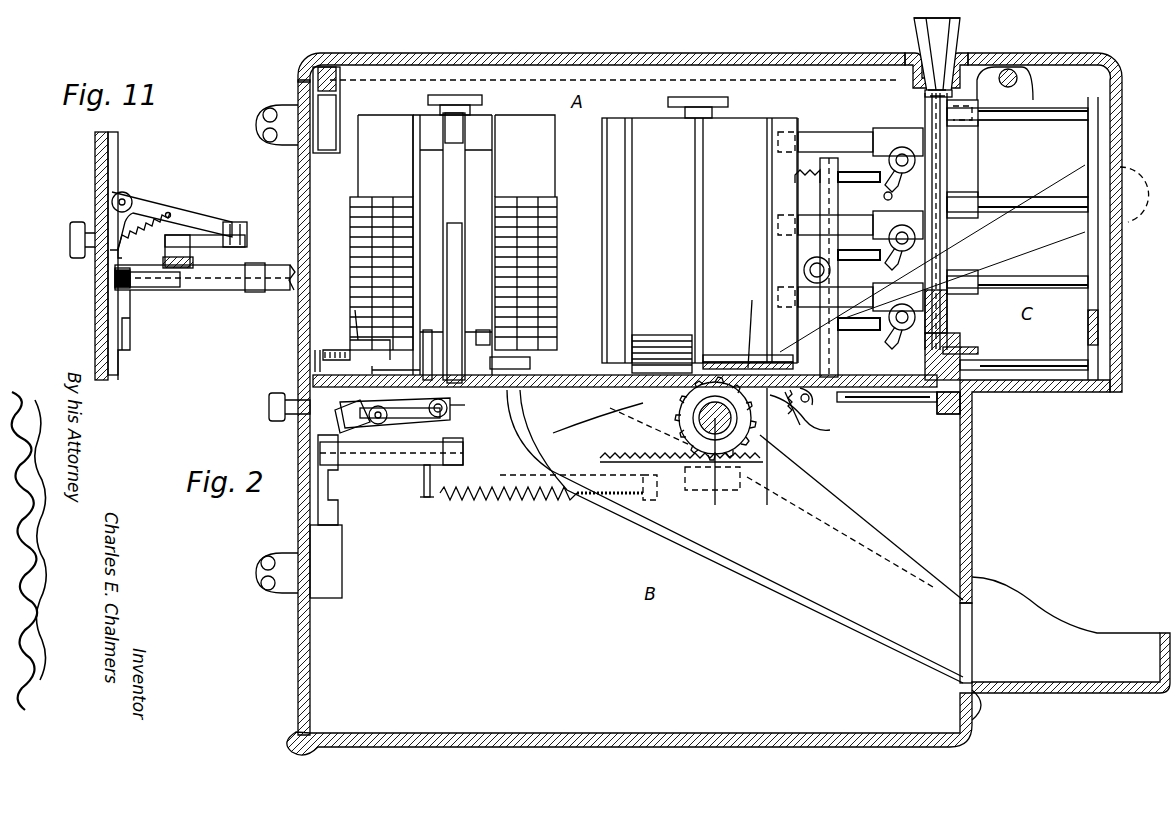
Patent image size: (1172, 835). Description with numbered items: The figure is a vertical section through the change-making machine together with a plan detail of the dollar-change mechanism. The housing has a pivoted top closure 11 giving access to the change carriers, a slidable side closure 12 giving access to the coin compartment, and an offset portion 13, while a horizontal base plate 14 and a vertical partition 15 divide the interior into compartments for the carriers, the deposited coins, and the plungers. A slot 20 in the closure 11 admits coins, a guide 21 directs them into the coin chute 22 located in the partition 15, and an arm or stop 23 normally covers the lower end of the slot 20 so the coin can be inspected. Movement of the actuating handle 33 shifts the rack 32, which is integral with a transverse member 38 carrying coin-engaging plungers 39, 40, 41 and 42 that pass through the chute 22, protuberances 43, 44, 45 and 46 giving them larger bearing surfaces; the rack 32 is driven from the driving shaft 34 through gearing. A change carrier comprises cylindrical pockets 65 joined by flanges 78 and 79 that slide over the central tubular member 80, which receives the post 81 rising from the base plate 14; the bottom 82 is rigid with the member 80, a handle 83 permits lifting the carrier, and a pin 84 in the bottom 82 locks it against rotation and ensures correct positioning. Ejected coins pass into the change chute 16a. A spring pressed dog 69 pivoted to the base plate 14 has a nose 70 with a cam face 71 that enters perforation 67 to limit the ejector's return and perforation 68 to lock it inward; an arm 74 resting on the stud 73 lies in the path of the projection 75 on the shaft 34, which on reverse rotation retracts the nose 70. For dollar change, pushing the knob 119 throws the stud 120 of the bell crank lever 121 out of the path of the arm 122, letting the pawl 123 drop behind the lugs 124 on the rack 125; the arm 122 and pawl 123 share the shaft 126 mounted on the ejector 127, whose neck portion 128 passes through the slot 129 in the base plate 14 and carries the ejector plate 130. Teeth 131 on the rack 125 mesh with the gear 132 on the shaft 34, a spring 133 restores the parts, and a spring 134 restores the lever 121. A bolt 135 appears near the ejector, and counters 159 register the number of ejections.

In FIG. 2, the pivoted closure 11 is at (476, 53).
In FIG. 2, the slidable closure 12 is at (312, 628).
In FIG. 2, the offset portion 13 is at (1122, 92).
In FIG. 2, the base plate 14 is at (832, 402).
In FIG. 2, the vertical partition 15 is at (947, 240).
In FIG. 2, the change chute 16a is at (735, 536).
In FIG. 2, the slot 20 is at (958, 48).
In FIG. 2, the guide 21 is at (917, 26).
In FIG. 2, the coin chute 22 is at (955, 142).
In FIG. 2, the arm or stop 23 is at (930, 94).
In FIG. 2, the rack 32 is at (1068, 160).
In FIG. 2, the actuating handle 33 is at (1126, 222).
In FIG. 2, the driving shaft 34 is at (715, 450).
In FIG. 2, the transverse member 38 is at (1090, 226).
In FIG. 2, the coin-engaging plunger 39 is at (1035, 362).
In FIG. 2, the coin-engaging plunger 40 is at (1048, 284).
In FIG. 2, the coin-engaging plunger 41 is at (1022, 206).
In FIG. 2, the coin-engaging plunger 42 is at (1092, 100).
In FIG. 2, the protuberance 43 is at (968, 350).
In FIG. 2, the protuberance 44 is at (965, 278).
In FIG. 2, the protuberance 45 is at (978, 172).
In FIG. 2, the protuberance 46 is at (1033, 86).
In FIG. 2, the pockets 65 is at (573, 239).
In FIG. 2, the perforation 67 is at (750, 321).
In FIG. 2, the perforation 68 is at (877, 405).
In FIG. 2, the spring pressed dog 69 is at (797, 412).
In FIG. 2, the nose 70 is at (778, 420).
In FIG. 2, the cam face 71 is at (745, 355).
In FIG. 2, the stud 73 is at (820, 410).
In FIG. 2, the arm 74 is at (808, 420).
In FIG. 2, the projection 75 is at (772, 456).
In FIG. 2, the flange 78 is at (488, 145).
In FIG. 2, the flange 79 is at (484, 330).
In FIG. 2, the tubular member 80 is at (466, 186).
In FIG. 2, the post 81 is at (452, 222).
In FIG. 2, the bottom 82 is at (715, 342).
In FIG. 2, the handle 83 is at (428, 100).
In FIG. 2, the pin 84 is at (427, 330).
In FIG. 2, the knob 119 is at (268, 407).
In FIG. 11, the knob 119 is at (70, 238).
In FIG. 11, the stud 120 is at (248, 232).
In FIG. 11, the bell crank lever 121 is at (135, 195).
In FIG. 2, the arm 122 is at (430, 425).
In FIG. 11, the arm 122 is at (215, 240).
In FIG. 2, the pawl 123 is at (362, 425).
In FIG. 11, the pawl 123 is at (152, 287).
In FIG. 2, the lugs 124 is at (330, 445).
In FIG. 11, the lugs 124 is at (112, 278).
In FIG. 2, the rack 125 is at (488, 452).
In FIG. 11, the rack 125 is at (232, 290).
In FIG. 2, the shaft 126 is at (375, 430).
In FIG. 11, the shaft 126 is at (180, 235).
In FIG. 2, the ejector 127 is at (472, 402).
In FIG. 2, the neck portion 128 is at (352, 340).
In FIG. 2, the slot 129 is at (375, 365).
In FIG. 2, the ejector plate 130 is at (356, 310).
In FIG. 2, the teeth 131 is at (608, 450).
In FIG. 2, the gear 132 is at (690, 420).
In FIG. 2, the spring 133 is at (535, 502).
In FIG. 11, the spring 134 is at (162, 222).
In FIG. 2, the bolt 135 is at (312, 355).
In FIG. 2, the counters 159 is at (897, 150).